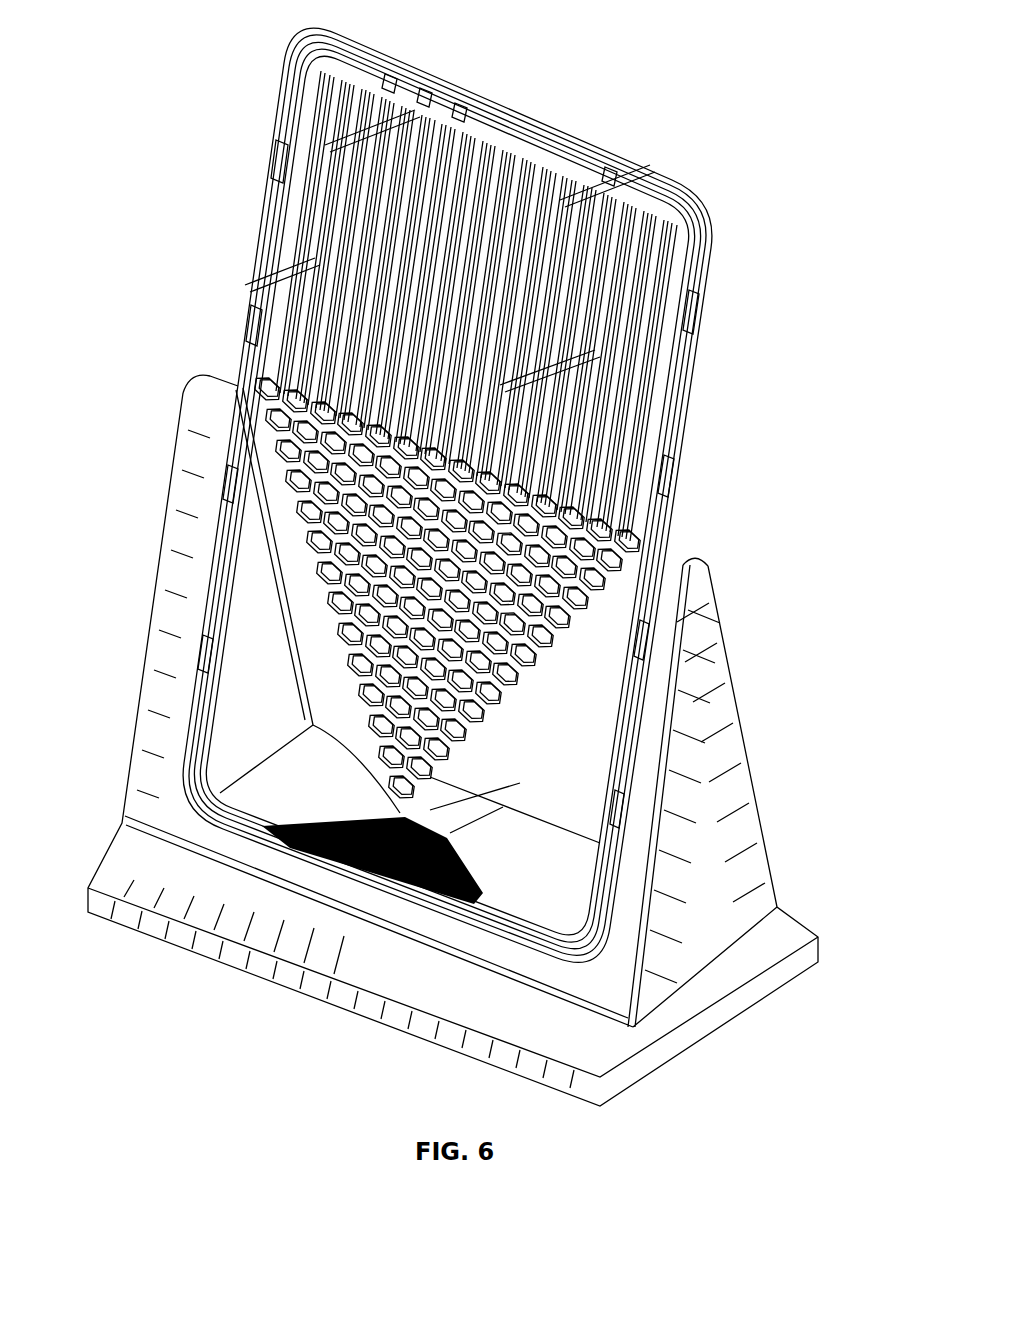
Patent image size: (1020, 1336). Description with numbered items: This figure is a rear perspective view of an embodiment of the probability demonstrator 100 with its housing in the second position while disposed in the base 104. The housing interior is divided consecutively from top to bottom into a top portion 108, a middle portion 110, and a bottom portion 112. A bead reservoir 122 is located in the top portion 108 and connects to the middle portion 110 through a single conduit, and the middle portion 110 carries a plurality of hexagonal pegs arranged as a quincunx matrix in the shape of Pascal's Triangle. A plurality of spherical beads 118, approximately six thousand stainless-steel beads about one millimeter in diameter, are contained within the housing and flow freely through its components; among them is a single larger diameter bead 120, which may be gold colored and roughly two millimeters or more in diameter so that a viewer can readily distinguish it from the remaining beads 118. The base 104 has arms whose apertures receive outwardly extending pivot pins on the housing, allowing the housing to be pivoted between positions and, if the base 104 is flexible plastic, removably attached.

The probability demonstrator 100 is at (713, 133).
The bottom portion 112 is at (643, 287).
The middle portion 110 is at (287, 508).
The base 104 is at (717, 757).
The top portion 108 is at (262, 826).
The single larger diameter bead 120 is at (347, 812).
The spherical beads 118 is at (400, 835).
The bead reservoir 122 is at (460, 880).